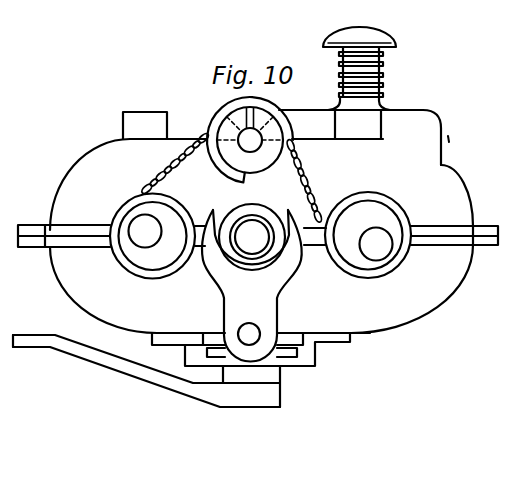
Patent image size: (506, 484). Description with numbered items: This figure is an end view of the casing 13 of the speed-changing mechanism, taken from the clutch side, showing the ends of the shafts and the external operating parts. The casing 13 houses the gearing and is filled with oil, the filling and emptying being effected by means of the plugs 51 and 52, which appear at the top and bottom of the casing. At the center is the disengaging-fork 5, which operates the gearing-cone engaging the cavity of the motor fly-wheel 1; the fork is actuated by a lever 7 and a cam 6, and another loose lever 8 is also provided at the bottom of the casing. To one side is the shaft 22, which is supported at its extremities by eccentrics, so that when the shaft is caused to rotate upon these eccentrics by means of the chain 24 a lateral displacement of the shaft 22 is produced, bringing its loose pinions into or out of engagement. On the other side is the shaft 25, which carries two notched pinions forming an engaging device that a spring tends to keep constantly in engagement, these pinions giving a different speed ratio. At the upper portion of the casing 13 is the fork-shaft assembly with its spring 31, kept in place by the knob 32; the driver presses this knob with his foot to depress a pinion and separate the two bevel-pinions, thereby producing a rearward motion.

The fly-wheel 1 is at (448, 139).
The disengaging-fork 5 is at (252, 283).
The cam 6 is at (267, 349).
The lever 7 is at (146, 371).
The loose lever 8 is at (251, 386).
The casing 13 is at (261, 221).
The shaft 22 is at (111, 236).
The chain 24 is at (164, 182).
The shaft 25 is at (401, 235).
The spring 31 is at (394, 78).
The knob 32 is at (359, 32).
The plug 51 is at (175, 127).
The plug 52 is at (188, 347).